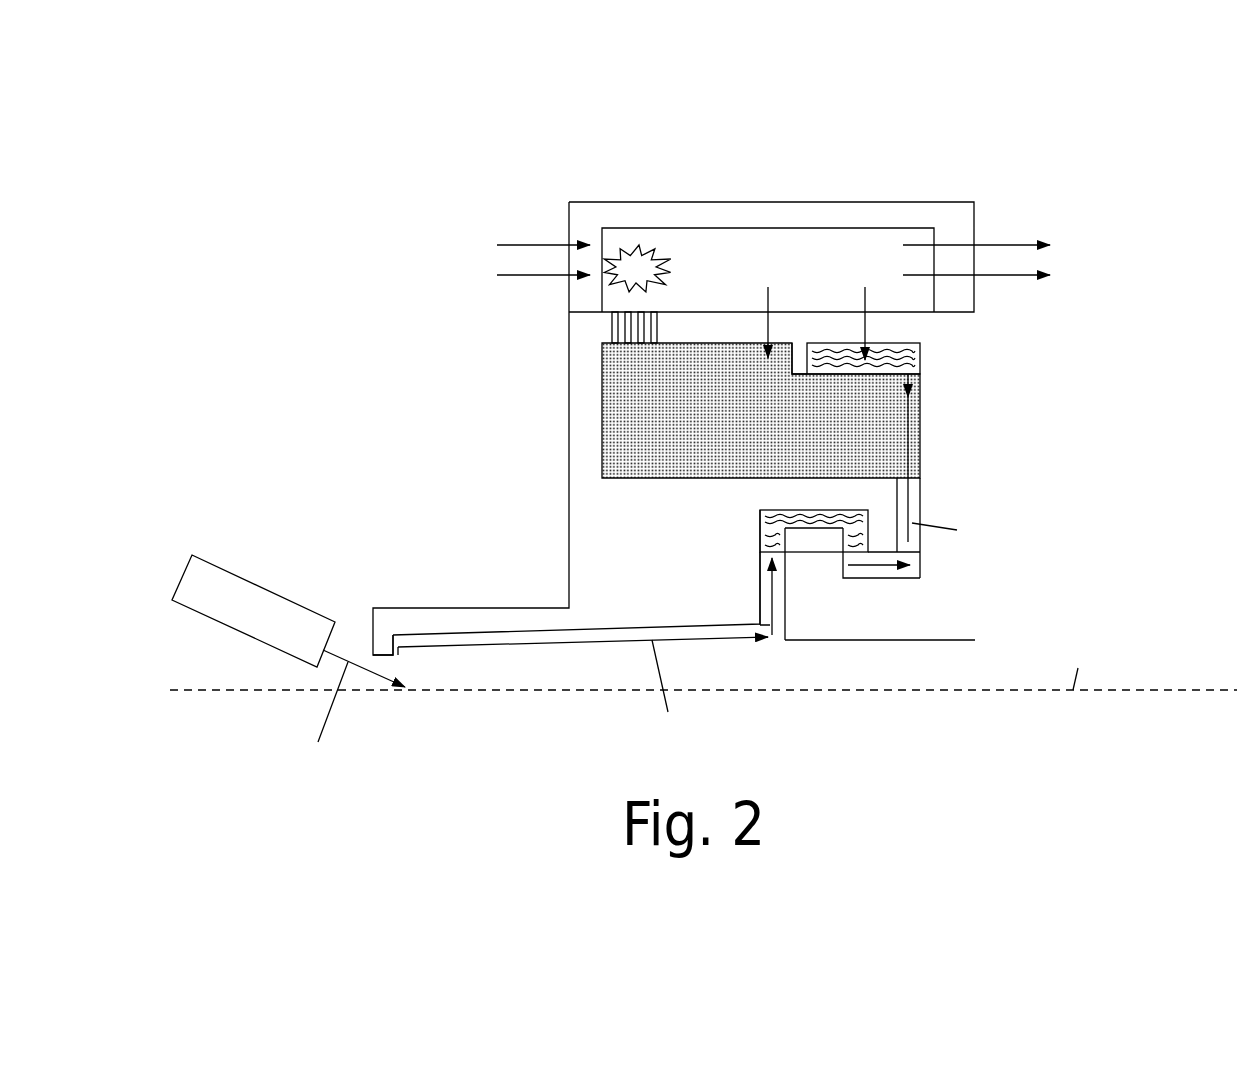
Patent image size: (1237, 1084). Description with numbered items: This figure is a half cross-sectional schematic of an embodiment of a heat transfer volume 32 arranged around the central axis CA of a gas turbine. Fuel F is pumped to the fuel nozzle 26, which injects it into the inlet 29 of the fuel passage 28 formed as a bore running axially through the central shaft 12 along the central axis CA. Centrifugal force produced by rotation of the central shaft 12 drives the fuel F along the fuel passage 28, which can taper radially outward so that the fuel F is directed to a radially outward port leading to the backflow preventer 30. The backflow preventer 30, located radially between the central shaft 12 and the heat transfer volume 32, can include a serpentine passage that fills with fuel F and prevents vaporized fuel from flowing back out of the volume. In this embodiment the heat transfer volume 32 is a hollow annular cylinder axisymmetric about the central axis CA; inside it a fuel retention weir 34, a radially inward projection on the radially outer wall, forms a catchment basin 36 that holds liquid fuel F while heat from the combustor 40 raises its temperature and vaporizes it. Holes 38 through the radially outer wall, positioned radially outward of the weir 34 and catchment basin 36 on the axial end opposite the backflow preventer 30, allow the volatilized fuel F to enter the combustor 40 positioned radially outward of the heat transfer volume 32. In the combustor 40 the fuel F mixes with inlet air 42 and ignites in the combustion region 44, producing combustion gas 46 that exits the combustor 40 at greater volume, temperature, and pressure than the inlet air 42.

The central shaft 12 is at (413, 617).
The fuel nozzle 26 is at (238, 600).
The fuel passage 28 is at (527, 635).
The inlet 29 is at (382, 642).
The backflow preventer 30 is at (870, 540).
The heat transfer volume 32 is at (830, 440).
The fuel retention weir 34 is at (797, 375).
The catchment basin 36 is at (922, 348).
The holes 38 is at (608, 330).
The combustor 40 is at (775, 210).
The inlet air 42 is at (513, 243).
The combustion region 44 is at (635, 263).
The combustion gas 46 is at (1008, 243).
The fuel F is at (638, 569).
The central axis CA is at (703, 667).